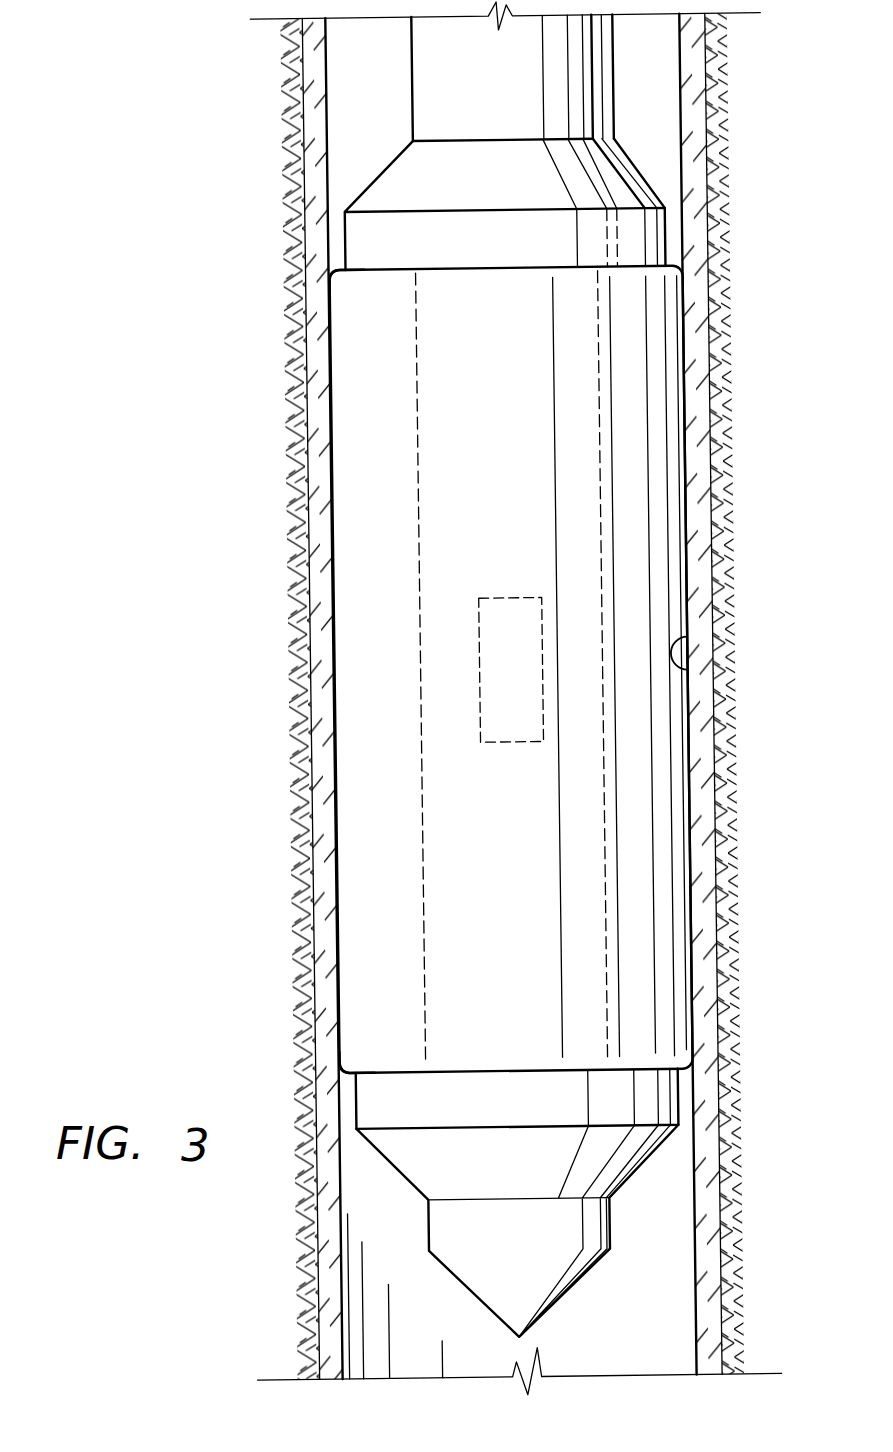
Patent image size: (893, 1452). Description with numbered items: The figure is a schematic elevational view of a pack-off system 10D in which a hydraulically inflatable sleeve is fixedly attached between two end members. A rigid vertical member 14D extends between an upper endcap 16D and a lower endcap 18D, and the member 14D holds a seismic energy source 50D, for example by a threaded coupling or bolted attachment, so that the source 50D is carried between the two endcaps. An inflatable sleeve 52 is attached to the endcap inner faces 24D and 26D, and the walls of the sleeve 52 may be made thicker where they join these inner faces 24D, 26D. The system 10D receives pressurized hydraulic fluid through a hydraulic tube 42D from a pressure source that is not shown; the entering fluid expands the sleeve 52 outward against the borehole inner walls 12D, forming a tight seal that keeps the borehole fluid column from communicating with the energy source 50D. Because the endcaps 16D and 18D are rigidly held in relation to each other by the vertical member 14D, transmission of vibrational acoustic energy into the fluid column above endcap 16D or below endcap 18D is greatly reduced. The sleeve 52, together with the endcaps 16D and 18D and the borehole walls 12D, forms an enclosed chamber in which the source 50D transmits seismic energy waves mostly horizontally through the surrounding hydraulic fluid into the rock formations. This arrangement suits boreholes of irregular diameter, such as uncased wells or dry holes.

The system 10D is at (509, 669).
The borehole inner walls 12D is at (678, 639).
The rigid member 14D is at (421, 578).
The endcap 16D is at (658, 239).
The endcap 18D is at (660, 1100).
The endcap inner face 24D is at (366, 268).
The endcap inner face 26D is at (375, 1066).
The hydraulic tube 42D is at (618, 88).
The seismic energy source 50D is at (504, 597).
The inflatable sleeve 52 is at (662, 829).